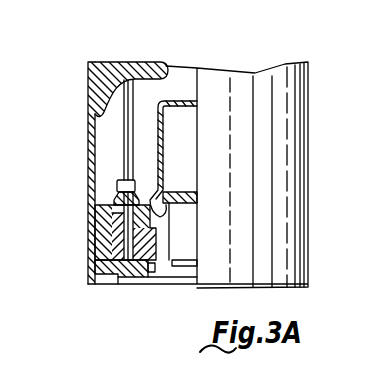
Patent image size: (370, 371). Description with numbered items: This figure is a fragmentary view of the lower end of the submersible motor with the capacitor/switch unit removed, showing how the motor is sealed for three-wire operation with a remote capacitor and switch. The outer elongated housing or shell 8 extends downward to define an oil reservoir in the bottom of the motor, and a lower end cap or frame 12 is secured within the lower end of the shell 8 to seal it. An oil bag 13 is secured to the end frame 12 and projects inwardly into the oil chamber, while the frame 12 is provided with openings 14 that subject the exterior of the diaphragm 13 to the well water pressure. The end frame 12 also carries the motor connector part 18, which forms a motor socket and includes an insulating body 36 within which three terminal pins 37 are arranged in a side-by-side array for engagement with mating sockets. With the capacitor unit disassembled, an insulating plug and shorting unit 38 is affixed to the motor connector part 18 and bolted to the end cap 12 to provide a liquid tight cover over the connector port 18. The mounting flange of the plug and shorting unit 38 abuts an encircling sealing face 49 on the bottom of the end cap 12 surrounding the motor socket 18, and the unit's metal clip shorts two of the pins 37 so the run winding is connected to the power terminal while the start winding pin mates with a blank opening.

The housing or shell 8 is at (88, 146).
The lower end cap or frame 12 is at (121, 63).
The oil bag 13 is at (160, 140).
The openings 14 is at (183, 190).
The motor connector part 18 is at (117, 284).
The insulating body 36 is at (106, 247).
The terminal pins 37 is at (112, 204).
The insulating plug and shorting unit 38 is at (135, 273).
The sealing face 49 is at (147, 265).